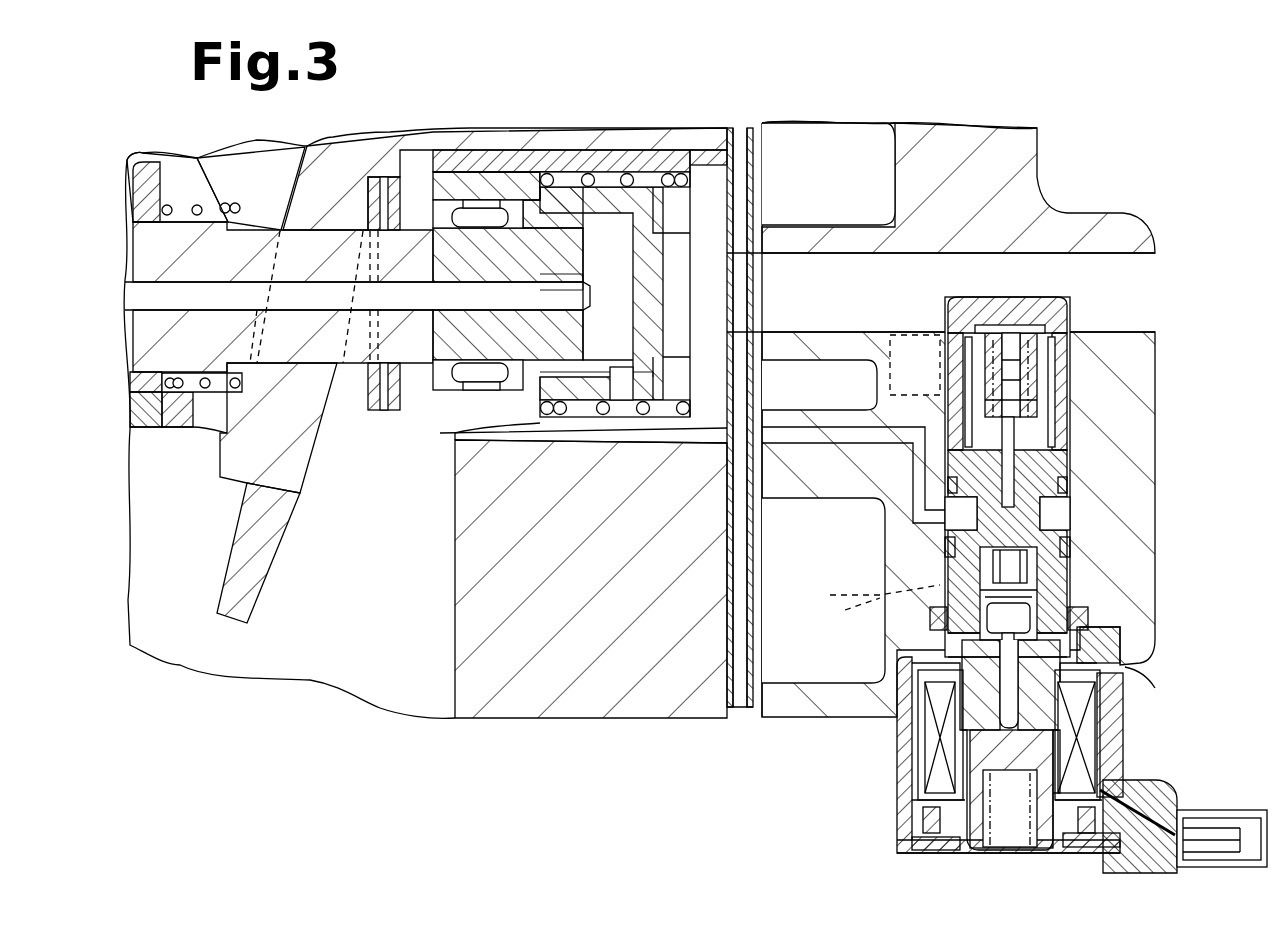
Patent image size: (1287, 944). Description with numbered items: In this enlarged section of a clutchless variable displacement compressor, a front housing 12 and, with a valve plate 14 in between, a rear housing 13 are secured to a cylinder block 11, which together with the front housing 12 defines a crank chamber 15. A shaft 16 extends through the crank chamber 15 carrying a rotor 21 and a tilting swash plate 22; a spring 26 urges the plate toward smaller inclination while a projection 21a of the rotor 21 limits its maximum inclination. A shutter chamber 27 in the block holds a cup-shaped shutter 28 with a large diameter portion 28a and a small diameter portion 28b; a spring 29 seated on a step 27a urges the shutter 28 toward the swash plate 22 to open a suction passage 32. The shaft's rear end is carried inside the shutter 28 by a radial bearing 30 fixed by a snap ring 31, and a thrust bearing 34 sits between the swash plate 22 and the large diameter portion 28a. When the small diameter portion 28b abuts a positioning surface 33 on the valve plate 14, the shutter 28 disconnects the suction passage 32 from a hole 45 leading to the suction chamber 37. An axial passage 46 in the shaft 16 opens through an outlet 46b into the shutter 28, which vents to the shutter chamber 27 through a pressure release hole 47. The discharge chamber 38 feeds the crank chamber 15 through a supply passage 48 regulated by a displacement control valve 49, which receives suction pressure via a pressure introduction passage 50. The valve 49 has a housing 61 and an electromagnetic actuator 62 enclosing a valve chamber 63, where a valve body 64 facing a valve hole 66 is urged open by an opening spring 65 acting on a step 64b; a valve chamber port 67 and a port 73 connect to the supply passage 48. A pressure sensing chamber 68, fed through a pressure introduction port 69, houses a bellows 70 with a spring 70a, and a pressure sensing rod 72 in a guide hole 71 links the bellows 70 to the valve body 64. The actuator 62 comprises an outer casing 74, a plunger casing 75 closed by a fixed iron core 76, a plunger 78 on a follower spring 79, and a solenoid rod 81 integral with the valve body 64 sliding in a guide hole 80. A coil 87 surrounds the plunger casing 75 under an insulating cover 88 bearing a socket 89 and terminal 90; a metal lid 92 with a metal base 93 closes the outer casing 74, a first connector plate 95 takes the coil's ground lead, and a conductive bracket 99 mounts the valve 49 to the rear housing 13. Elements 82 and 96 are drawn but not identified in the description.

The cylinder block 11 is at (580, 718).
The front housing 12 is at (958, 419).
The rear housing 13 is at (792, 717).
The valve plate 14 is at (742, 707).
The crank chamber 15 is at (410, 634).
The shaft 16 is at (345, 365).
The rotor 21 is at (133, 212).
The projection 21a is at (153, 425).
The swash plate 22 is at (262, 552).
The spring 26 is at (237, 204).
The shutter chamber 27 is at (657, 418).
The step 27a is at (705, 150).
The shutter 28 is at (448, 165).
The large diameter portion 28a is at (500, 178).
The small diameter portion 28b is at (600, 185).
The spring 29 is at (548, 420).
The radial bearing 30 is at (480, 362).
The snap ring 31 is at (437, 412).
The suction passage 32 is at (1155, 332).
The positioning surface 33 is at (727, 210).
The thrust bearing 34 is at (388, 412).
The suction chamber 37 is at (824, 195).
The discharge chamber 38 is at (781, 560).
The hole 45 is at (727, 368).
The axial passage 46 is at (165, 310).
The outlet 46b is at (560, 287).
The pressure release hole 47 is at (620, 390).
The supply passage 48 is at (503, 443).
The displacement control valve 49 is at (873, 860).
The pressure introduction passage 50 is at (890, 335).
The housing 61 is at (1065, 440).
The electromagnetic actuator 62 is at (1115, 730).
The valve chamber 63 is at (985, 555).
The valve body 64 is at (970, 548).
The step 64b is at (1070, 613).
The opening spring 65 is at (1040, 553).
The valve hole 66 is at (1040, 525).
The valve chamber port 67 is at (945, 590).
The pressure sensing chamber 68 is at (1060, 345).
The pressure introduction port 69 is at (947, 357).
The bellows 70 is at (1045, 405).
The spring 70a is at (1020, 322).
The guide hole 71 is at (1060, 470).
The pressure sensing rod 72 is at (958, 422).
The port 73 is at (940, 500).
The outer casing 74 is at (1140, 700).
The plunger casing 75 is at (1010, 853).
The fixed iron core 76 is at (920, 727).
The plunger 78 is at (1100, 760).
The follower spring 79 is at (1011, 789).
The guide hole 80 is at (957, 640).
The solenoid rod 81 is at (905, 668).
The flange 82 is at (1135, 664).
The coil 87 is at (930, 760).
The insulating cover 88 is at (1180, 797).
The socket 89 is at (1240, 867).
The terminal 90 is at (1205, 855).
The metal lid 92 is at (1045, 857).
The metal base 93 is at (960, 853).
The first connector plate 95 is at (912, 828).
The cover 96 is at (923, 853).
The bracket 99 is at (1123, 637).